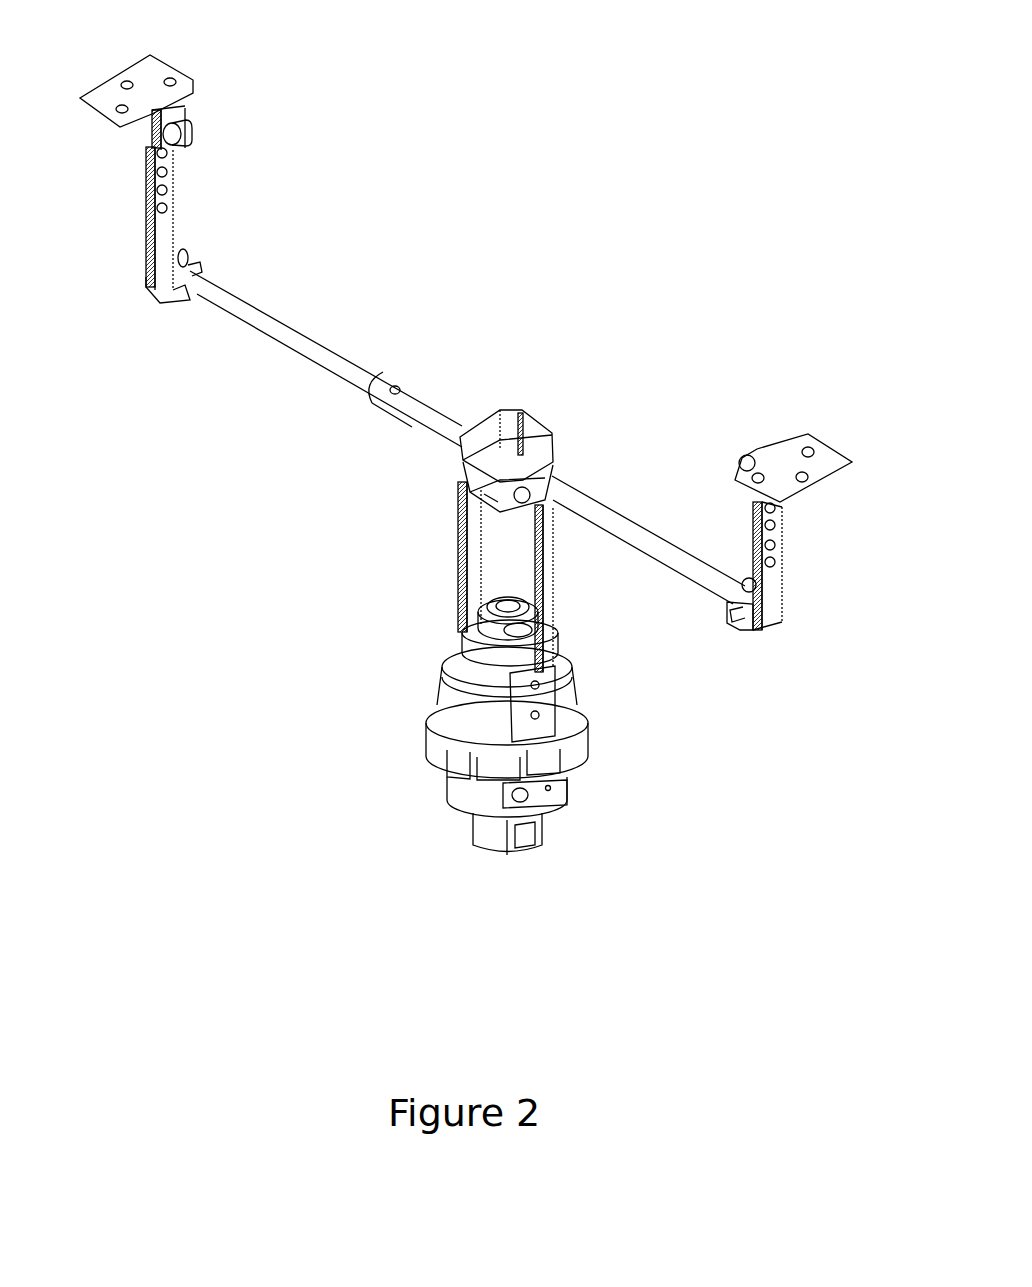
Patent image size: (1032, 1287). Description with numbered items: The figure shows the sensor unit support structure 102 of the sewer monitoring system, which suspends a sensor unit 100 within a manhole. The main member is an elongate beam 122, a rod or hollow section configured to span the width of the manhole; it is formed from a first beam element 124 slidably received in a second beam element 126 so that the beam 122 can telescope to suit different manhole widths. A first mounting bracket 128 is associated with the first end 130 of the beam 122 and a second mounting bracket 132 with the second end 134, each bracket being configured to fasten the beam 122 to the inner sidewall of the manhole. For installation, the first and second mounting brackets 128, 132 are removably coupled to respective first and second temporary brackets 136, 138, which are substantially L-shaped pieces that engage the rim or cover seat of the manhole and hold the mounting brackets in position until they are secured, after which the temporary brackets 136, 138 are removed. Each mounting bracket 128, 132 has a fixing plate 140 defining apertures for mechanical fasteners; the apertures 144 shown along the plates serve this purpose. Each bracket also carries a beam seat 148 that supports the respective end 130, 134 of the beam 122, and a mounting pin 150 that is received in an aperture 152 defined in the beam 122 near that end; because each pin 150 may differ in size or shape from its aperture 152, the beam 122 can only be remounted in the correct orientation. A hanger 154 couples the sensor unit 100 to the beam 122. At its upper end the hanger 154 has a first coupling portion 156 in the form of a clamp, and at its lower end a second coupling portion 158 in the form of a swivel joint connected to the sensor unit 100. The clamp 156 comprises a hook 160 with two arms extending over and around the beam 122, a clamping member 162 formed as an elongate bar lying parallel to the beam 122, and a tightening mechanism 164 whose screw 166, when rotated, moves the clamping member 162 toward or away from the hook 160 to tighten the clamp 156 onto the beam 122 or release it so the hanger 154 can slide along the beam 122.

The sensor unit 100 is at (463, 726).
The sensor unit support structure 102 is at (313, 343).
The elongate beam 122 is at (383, 385).
The first beam element 124 is at (345, 367).
The second beam element 126 is at (410, 407).
The first mounting bracket 128 is at (178, 227).
The first end of the beam 130 is at (158, 191).
The second mounting bracket 132 is at (770, 603).
The second end of the beam 134 is at (769, 553).
The first temporary bracket 136 is at (143, 67).
The second temporary bracket 138 is at (830, 453).
The fixing plate 140 is at (150, 225).
The adjustment holes 144 is at (167, 208).
The beam seat 148 is at (177, 300).
The mounting pin 150 is at (178, 258).
The aperture 152 is at (186, 268).
The hanger 154 is at (472, 547).
The first coupling portion 156 is at (484, 471).
The second coupling portion 158 is at (465, 640).
The hook 160 is at (457, 450).
The clamping member 162 is at (470, 478).
The tightening mechanism 164 is at (483, 490).
The screw 166 is at (487, 493).